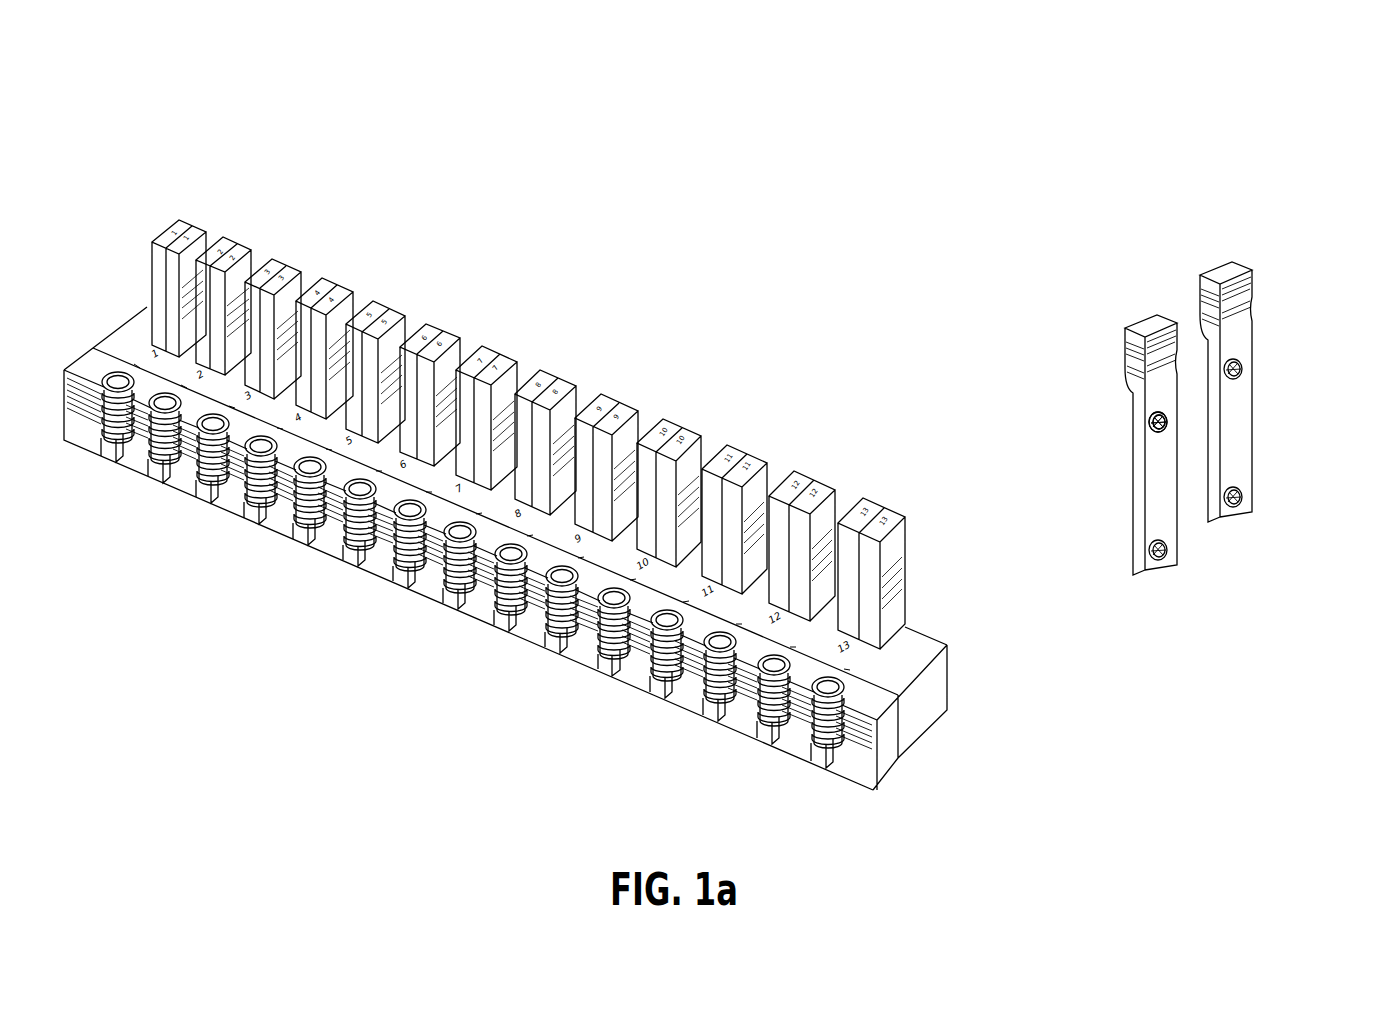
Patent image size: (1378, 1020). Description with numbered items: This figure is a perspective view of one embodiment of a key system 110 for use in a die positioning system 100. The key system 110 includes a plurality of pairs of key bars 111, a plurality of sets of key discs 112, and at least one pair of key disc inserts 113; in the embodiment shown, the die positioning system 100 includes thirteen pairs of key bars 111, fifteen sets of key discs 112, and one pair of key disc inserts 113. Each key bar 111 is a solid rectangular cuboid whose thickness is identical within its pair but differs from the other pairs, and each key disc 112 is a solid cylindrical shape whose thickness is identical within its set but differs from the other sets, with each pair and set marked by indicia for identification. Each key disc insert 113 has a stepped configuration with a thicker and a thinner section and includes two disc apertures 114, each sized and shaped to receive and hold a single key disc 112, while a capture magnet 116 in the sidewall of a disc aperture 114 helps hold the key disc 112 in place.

The die positioning system 100 is at (410, 126).
The key system 110 is at (1174, 350).
The key bar 111 is at (608, 398).
The key disc 112 is at (331, 548).
The key disc insert 113 is at (1160, 478).
The disc aperture 114 is at (1244, 498).
The capture magnet 116 is at (1150, 416).